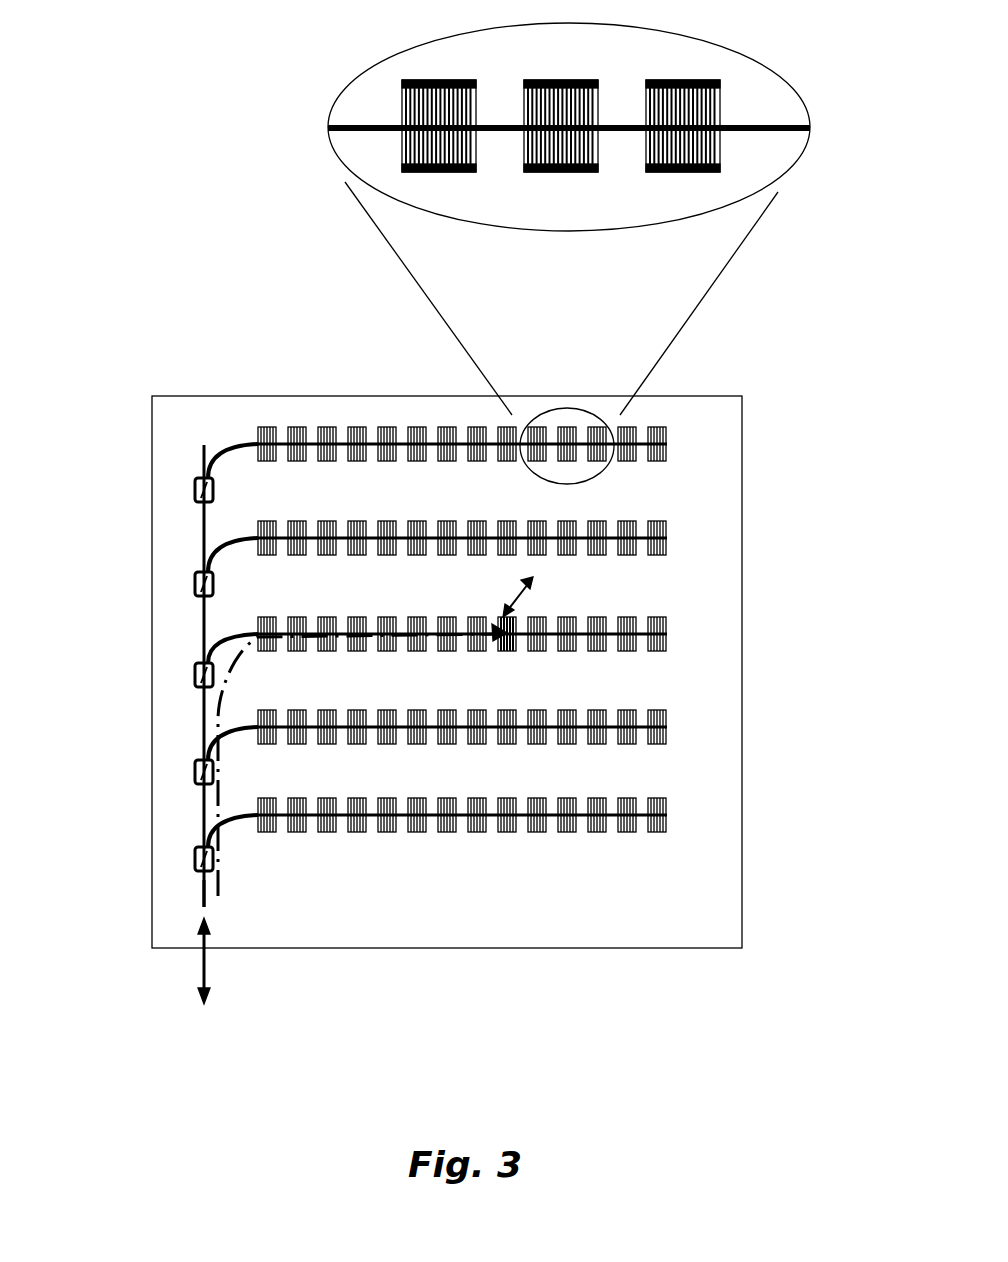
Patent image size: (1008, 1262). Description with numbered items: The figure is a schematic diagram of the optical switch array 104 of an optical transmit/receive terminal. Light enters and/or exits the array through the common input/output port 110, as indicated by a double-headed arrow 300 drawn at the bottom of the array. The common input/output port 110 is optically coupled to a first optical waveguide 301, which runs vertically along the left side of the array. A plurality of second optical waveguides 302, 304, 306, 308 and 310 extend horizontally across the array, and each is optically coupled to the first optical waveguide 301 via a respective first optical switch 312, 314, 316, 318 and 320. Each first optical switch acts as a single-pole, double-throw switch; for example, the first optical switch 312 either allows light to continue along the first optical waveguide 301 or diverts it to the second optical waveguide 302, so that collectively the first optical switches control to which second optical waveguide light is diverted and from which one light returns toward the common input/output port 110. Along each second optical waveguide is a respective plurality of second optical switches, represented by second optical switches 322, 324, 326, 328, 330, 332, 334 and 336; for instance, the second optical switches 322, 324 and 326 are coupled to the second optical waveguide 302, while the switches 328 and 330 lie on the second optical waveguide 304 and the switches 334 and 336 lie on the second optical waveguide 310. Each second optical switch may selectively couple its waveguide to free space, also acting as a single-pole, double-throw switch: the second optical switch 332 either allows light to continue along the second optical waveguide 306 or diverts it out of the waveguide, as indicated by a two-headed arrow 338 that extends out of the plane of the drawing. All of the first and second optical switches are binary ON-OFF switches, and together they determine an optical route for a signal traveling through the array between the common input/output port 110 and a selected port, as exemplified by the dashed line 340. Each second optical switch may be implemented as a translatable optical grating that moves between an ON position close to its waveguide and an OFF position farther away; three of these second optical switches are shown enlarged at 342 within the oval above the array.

The enlarged view of second optical switches 342 is at (762, 62).
The second optical switch 334 is at (297, 428).
The second optical switch 336 is at (387, 428).
The optical switch array 104 is at (690, 396).
The second optical waveguide 310 is at (529, 385).
The second optical waveguide 308 is at (668, 538).
The second optical waveguide 306 is at (548, 641).
The second optical waveguide 304 is at (549, 755).
The second optical waveguide 302 is at (543, 908).
The two-headed arrow 338 is at (522, 604).
The second optical switch 332 is at (504, 648).
The second optical switch 330 is at (660, 744).
The second optical switch 328 is at (625, 744).
The dashed line 340 is at (236, 655).
The first optical switch 320 is at (196, 488).
The first optical switch 318 is at (196, 582).
The first optical switch 316 is at (196, 672).
The first optical switch 314 is at (196, 771).
The first optical switch 312 is at (196, 859).
The first optical waveguide 301 is at (204, 820).
The common input/output port 110 is at (204, 906).
The double-headed arrow 300 is at (204, 960).
The second optical switch 322 is at (265, 832).
The second optical switch 324 is at (385, 832).
The second optical switch 326 is at (475, 832).